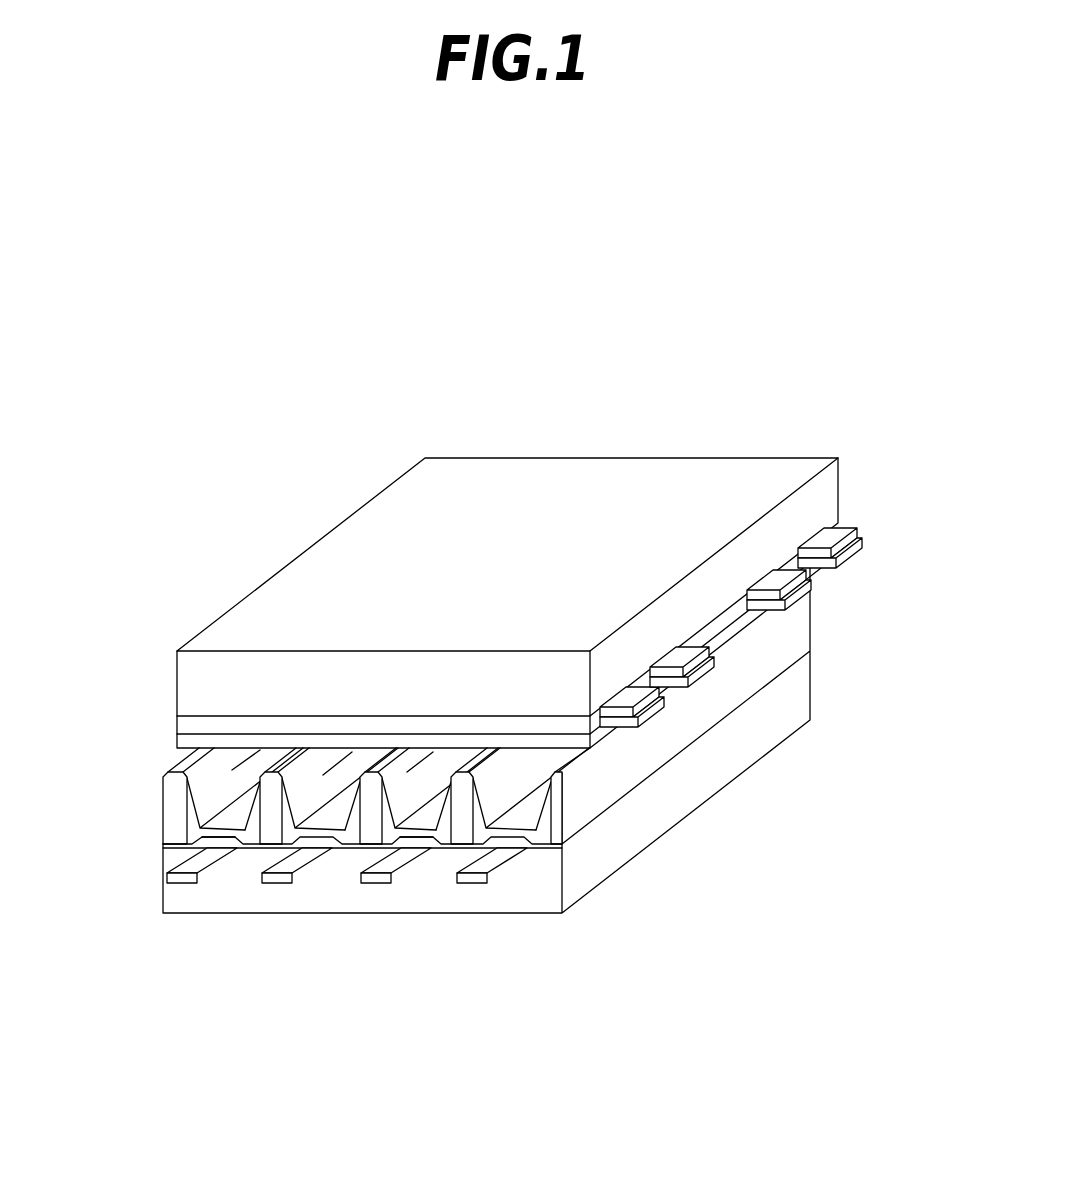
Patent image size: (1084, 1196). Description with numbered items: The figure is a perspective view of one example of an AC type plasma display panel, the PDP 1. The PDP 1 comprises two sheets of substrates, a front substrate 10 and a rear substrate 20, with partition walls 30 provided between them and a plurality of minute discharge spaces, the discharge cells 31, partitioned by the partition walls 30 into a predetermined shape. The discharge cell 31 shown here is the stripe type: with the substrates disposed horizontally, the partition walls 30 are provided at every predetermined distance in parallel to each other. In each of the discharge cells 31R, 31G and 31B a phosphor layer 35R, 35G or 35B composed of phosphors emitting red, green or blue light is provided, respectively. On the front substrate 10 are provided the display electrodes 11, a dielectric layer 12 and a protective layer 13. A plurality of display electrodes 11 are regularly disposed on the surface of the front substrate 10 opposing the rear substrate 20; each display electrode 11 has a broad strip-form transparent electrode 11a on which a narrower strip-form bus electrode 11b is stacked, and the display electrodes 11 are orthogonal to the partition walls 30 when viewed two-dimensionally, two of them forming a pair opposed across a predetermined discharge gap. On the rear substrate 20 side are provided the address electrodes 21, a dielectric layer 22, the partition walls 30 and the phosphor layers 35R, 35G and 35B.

The PDP 1 is at (868, 485).
The front substrate 10 is at (183, 703).
The display electrode 11 is at (748, 692).
The transparent electrode 11a is at (833, 542).
The bus electrode 11b is at (787, 603).
The dielectric layer 12 is at (182, 732).
The protective layer 13 is at (178, 748).
The rear substrate 20 is at (780, 732).
The address electrode 21 is at (220, 848).
The dielectric layer 22 is at (218, 829).
The partition wall 30 is at (700, 712).
The discharge cell 31 is at (518, 574).
The red discharge cell 31R is at (232, 770).
The green discharge cell 31G is at (323, 775).
The blue discharge cell 31B is at (407, 772).
The red phosphor layer 35R is at (177, 885).
The green phosphor layer 35G is at (292, 885).
The blue phosphor layer 35B is at (378, 848).